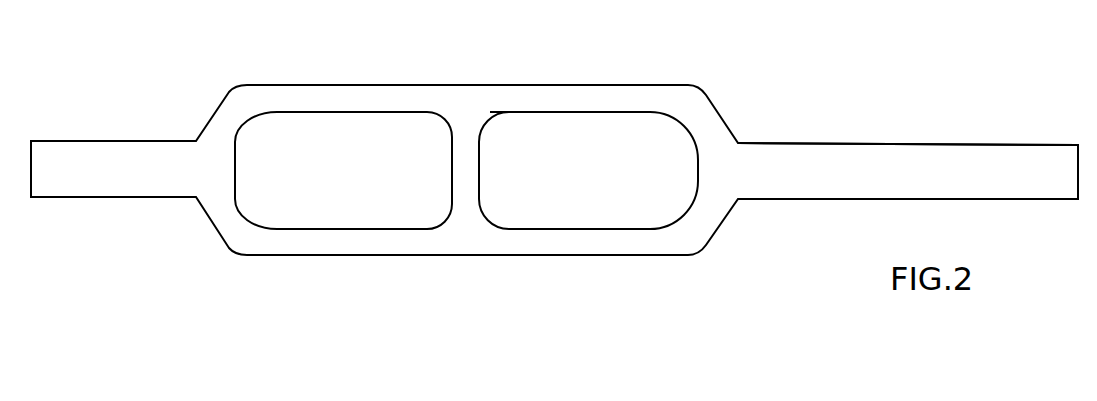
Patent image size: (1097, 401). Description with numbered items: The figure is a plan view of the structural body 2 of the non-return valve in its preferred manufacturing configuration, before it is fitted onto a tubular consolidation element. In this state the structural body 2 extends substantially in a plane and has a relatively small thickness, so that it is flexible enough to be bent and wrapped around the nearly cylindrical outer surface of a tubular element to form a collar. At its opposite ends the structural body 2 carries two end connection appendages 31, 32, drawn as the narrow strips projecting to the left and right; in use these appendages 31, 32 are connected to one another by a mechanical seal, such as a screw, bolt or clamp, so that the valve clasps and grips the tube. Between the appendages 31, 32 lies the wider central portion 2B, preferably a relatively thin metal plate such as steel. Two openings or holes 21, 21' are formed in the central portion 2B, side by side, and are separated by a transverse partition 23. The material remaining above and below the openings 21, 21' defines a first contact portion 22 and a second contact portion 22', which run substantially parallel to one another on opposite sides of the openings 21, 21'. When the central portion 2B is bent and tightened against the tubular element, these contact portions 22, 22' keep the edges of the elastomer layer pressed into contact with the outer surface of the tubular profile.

The structural body 2 is at (772, 108).
The central portion 2B is at (406, 86).
The opening 21 is at (343, 208).
The opening 21' is at (588, 211).
The first contact portion 22 is at (545, 70).
The second contact portion 22' is at (624, 270).
The transverse partition 23 is at (469, 198).
The end connection appendage 31 is at (172, 150).
The end connection appendage 32 is at (910, 152).